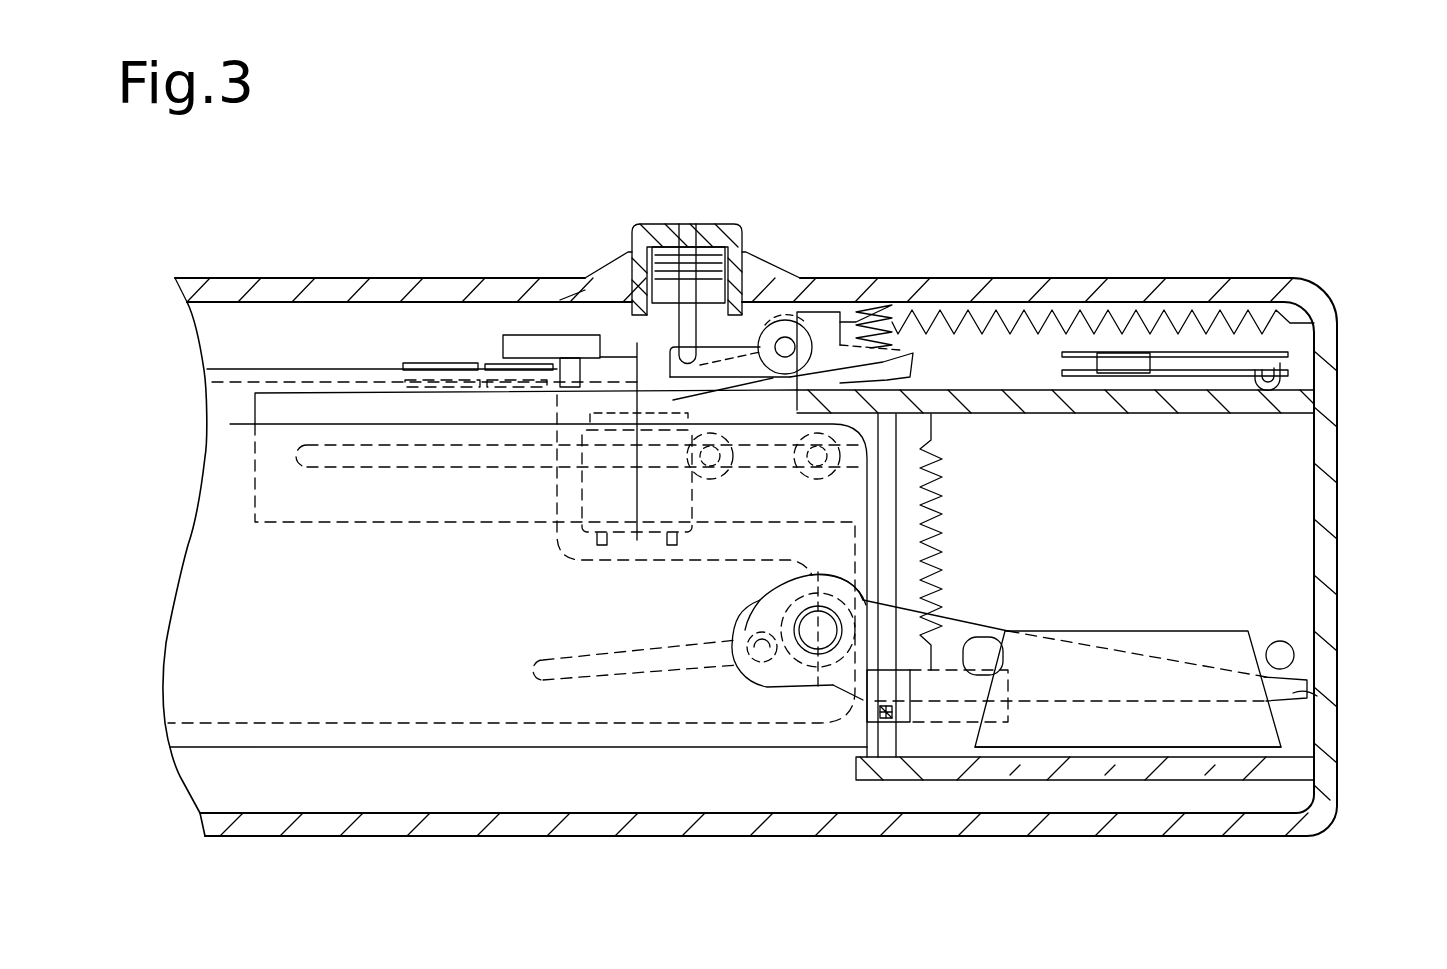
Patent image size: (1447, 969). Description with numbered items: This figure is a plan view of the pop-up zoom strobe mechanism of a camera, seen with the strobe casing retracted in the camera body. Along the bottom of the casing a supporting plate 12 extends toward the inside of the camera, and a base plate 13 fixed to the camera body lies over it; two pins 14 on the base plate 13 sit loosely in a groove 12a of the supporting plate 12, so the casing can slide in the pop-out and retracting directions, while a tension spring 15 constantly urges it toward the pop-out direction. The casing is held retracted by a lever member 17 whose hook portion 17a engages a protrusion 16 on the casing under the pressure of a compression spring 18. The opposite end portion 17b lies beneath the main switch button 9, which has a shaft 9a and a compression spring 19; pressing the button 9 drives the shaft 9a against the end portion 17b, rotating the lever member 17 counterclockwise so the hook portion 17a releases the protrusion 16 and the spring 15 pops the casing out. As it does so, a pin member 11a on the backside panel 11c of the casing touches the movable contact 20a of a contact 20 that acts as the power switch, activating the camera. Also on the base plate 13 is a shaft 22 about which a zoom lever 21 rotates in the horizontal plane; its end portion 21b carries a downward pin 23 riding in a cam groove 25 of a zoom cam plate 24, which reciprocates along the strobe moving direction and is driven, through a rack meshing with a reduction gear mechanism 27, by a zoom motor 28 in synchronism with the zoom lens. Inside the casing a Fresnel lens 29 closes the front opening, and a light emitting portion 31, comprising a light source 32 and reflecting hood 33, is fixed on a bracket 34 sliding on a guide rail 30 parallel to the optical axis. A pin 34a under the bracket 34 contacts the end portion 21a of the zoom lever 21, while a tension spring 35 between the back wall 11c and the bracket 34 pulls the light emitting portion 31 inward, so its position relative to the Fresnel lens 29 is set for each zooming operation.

The main switch button 9 is at (688, 218).
The shaft 9a is at (680, 335).
The pin member 11a is at (827, 312).
The backside panel 11c is at (1070, 412).
The supporting plate 12 is at (302, 405).
The groove 12a is at (370, 457).
The base plate 13 is at (422, 735).
The pins 14 is at (830, 462).
The tension spring 15 is at (1125, 318).
The protrusion 16 is at (812, 330).
The lever member 17 is at (740, 305).
The hook portion 17a is at (905, 385).
The end portion 17b is at (665, 345).
The compression spring 18 is at (890, 305).
The compression spring 19 is at (663, 230).
The contact 20 is at (1208, 350).
The movable contact 20a is at (1283, 380).
The zoom lever 21 is at (949, 645).
The end portion 21a is at (1320, 700).
The end portion 21b is at (770, 592).
The shaft 22 is at (830, 645).
The pin 23 is at (763, 657).
The zoom cam plate 24 is at (315, 697).
The cam groove 25 is at (600, 667).
The reduction gear mechanism 27 is at (463, 362).
The zoom motor 28 is at (662, 520).
The Fresnel lens 29 is at (1077, 766).
The guide rail 30 is at (886, 502).
The light emitting portion 31 is at (1110, 628).
The light source 32 is at (1272, 643).
The reflecting hood 33 is at (1236, 733).
The bracket 34 is at (968, 690).
The pin 34a is at (885, 720).
The tension spring 35 is at (943, 533).